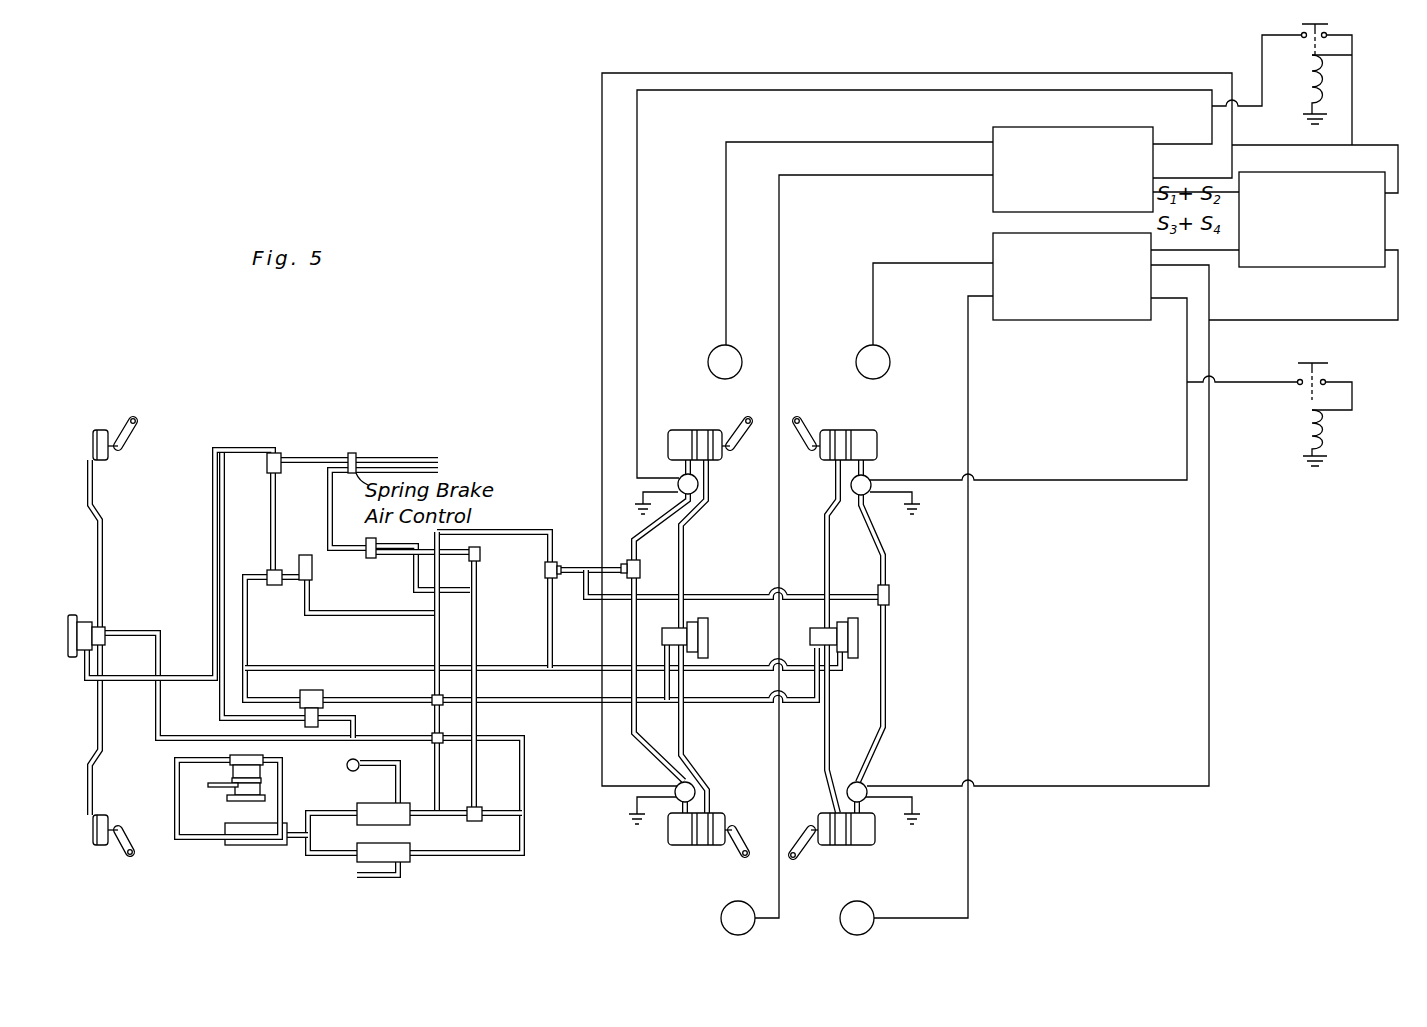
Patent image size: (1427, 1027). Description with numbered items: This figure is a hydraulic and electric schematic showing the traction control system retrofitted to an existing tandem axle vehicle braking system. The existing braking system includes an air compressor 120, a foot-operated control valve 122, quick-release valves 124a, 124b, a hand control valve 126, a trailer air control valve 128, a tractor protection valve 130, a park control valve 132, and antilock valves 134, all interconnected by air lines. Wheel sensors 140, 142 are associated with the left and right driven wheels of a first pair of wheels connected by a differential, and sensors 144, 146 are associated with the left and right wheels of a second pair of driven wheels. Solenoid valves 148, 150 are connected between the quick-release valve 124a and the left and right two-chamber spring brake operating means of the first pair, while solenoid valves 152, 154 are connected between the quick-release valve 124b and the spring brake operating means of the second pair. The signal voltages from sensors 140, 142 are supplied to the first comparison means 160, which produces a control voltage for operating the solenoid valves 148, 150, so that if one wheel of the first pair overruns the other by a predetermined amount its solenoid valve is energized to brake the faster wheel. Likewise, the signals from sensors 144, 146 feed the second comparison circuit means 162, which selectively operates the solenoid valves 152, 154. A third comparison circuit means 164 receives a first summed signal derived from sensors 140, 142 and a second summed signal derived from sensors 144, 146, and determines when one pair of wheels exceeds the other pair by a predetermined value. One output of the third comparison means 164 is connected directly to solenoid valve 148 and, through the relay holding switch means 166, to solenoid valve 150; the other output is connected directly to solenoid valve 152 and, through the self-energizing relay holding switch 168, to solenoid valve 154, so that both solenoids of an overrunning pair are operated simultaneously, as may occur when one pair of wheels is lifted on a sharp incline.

The air compressor 120 is at (243, 802).
The foot-operated control valve 122 is at (322, 695).
The quick-release valve 124a is at (640, 569).
The quick-release valve 124b is at (888, 594).
The hand control valve 126 is at (308, 555).
The trailer air control valve 128 is at (370, 560).
The tractor protection valve 130 is at (352, 453).
The park control valve 132 is at (479, 556).
The antilock valves 134 is at (700, 643).
The wheel sensor 140 is at (721, 918).
The wheel sensor 142 is at (708, 366).
The sensor 144 is at (872, 909).
The sensor 146 is at (856, 366).
The solenoid valve 148 is at (696, 787).
The solenoid valve 150 is at (699, 486).
The solenoid valve 152 is at (862, 786).
The solenoid valve 154 is at (870, 476).
The first comparison means 160 is at (1101, 127).
The second comparison circuit means 162 is at (1108, 320).
The third comparison circuit means 164 is at (1264, 267).
The relay holding switch means 166 is at (1410, 77).
The self-energizing relay holding switch 168 is at (1410, 372).